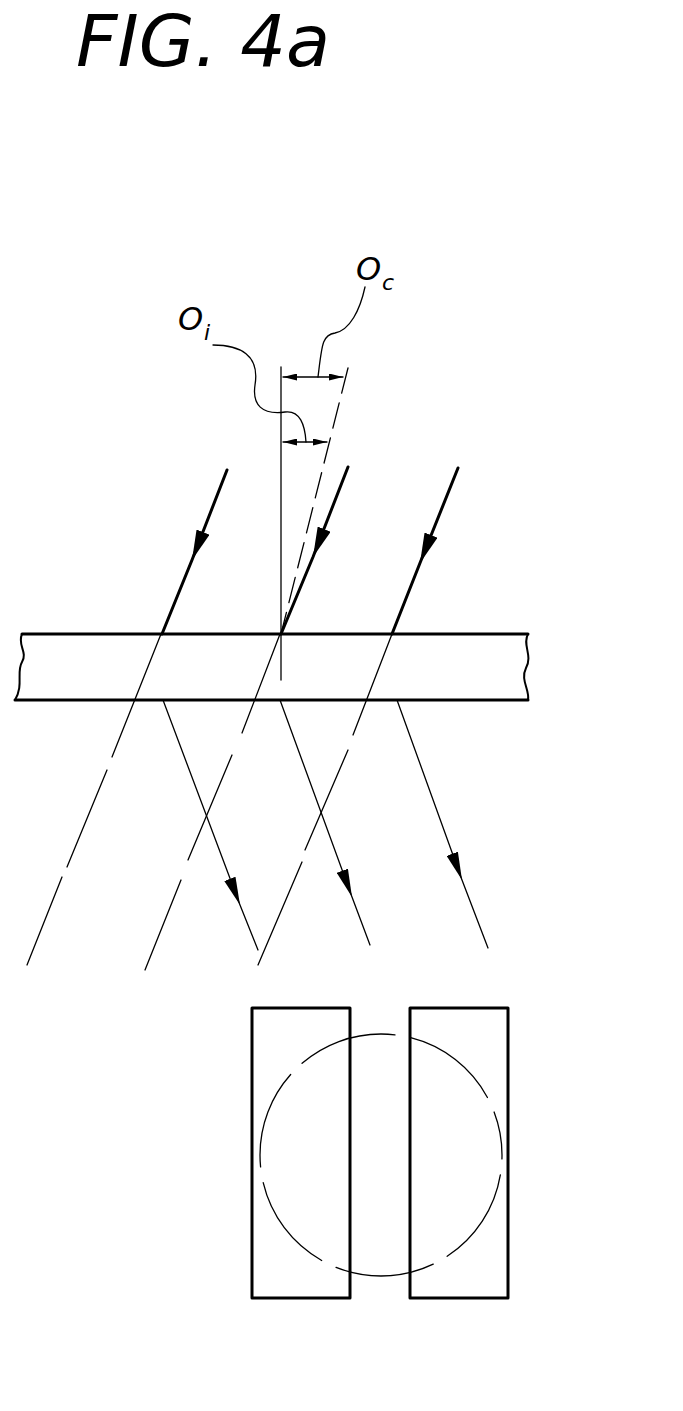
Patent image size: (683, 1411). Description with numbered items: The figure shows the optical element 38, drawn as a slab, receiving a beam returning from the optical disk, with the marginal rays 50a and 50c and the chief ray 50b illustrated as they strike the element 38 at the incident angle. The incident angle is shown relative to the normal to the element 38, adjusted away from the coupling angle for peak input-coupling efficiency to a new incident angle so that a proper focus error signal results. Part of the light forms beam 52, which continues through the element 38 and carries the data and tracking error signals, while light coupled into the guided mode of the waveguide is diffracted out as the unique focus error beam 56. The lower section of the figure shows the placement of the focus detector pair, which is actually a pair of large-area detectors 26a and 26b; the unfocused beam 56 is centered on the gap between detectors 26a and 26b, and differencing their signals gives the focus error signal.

The element 38 is at (457, 662).
The marginal ray 50a is at (443, 510).
The chief ray 50b is at (348, 485).
The marginal ray 50c is at (223, 484).
The beam 52 is at (115, 740).
The focus error beam 56 is at (447, 833).
The detector 26a is at (283, 1300).
The detector 26b is at (467, 1303).